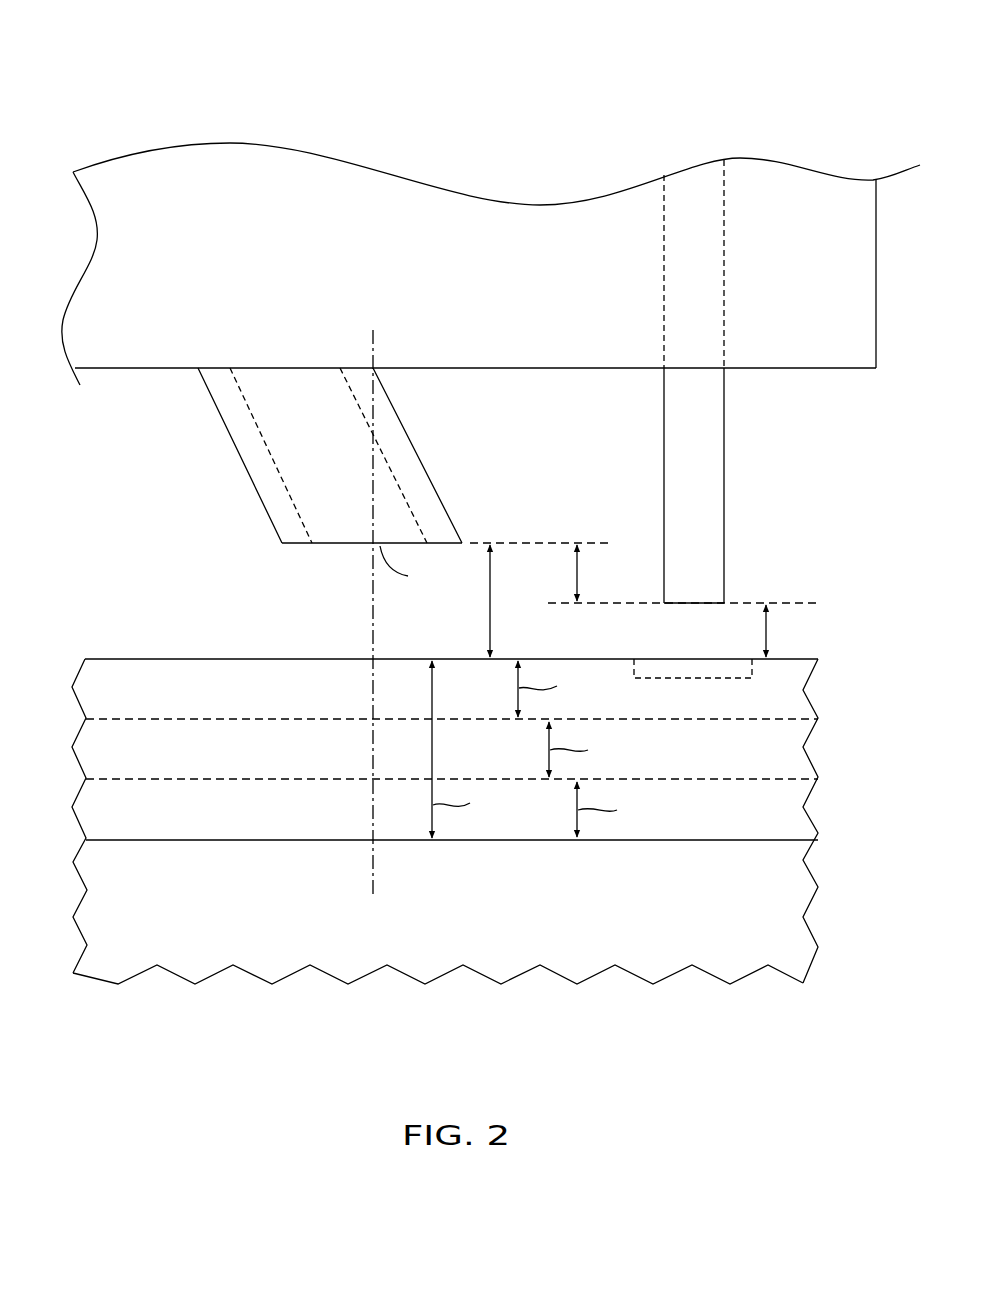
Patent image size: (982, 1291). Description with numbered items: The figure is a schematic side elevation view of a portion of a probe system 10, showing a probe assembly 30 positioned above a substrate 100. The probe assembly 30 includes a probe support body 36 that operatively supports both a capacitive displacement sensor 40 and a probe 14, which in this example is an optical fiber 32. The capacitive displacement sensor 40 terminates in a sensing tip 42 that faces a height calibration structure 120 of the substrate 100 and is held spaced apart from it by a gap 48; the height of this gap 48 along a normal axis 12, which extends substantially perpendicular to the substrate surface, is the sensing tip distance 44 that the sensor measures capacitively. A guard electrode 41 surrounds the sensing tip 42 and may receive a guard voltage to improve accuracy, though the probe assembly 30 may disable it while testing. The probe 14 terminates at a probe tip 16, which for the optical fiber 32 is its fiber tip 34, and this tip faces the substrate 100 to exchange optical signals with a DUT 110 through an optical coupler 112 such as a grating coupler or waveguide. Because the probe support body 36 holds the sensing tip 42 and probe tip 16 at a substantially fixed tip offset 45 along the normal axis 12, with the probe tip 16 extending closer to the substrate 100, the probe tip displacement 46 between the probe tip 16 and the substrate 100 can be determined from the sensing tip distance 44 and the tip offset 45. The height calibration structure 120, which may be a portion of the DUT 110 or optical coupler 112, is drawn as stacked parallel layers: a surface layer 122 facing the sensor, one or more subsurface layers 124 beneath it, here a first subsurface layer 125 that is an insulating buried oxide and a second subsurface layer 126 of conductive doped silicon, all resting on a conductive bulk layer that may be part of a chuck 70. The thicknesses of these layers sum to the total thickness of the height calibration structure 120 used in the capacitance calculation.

The probe system 10 is at (118, 27).
The probe assembly 30 is at (124, 78).
The probe support body 36 is at (115, 370).
The capacitive displacement sensor 40 is at (340, 613).
The guard electrode 41 is at (298, 546).
The sensing tip 42 is at (347, 546).
The normal axis 12 is at (372, 592).
The gap 48 is at (290, 602).
The optical fiber 32 is at (683, 504).
The probe 14 is at (728, 498).
The fiber tip 34 is at (688, 606).
The probe tip 16 is at (700, 606).
The sensing tip distance 44 is at (492, 621).
The tip offset 45 is at (579, 572).
The probe tip displacement 46 is at (768, 630).
The substrate 100 is at (95, 592).
The DUT 110 is at (108, 625).
The height calibration structure 120 is at (115, 656).
The optical coupler 112 is at (693, 657).
The surface layer 122 is at (105, 697).
The first subsurface layer 125 is at (105, 743).
The subsurface layers 124 is at (107, 805).
The second subsurface layer 126 is at (107, 825).
The chuck 70 is at (62, 857).